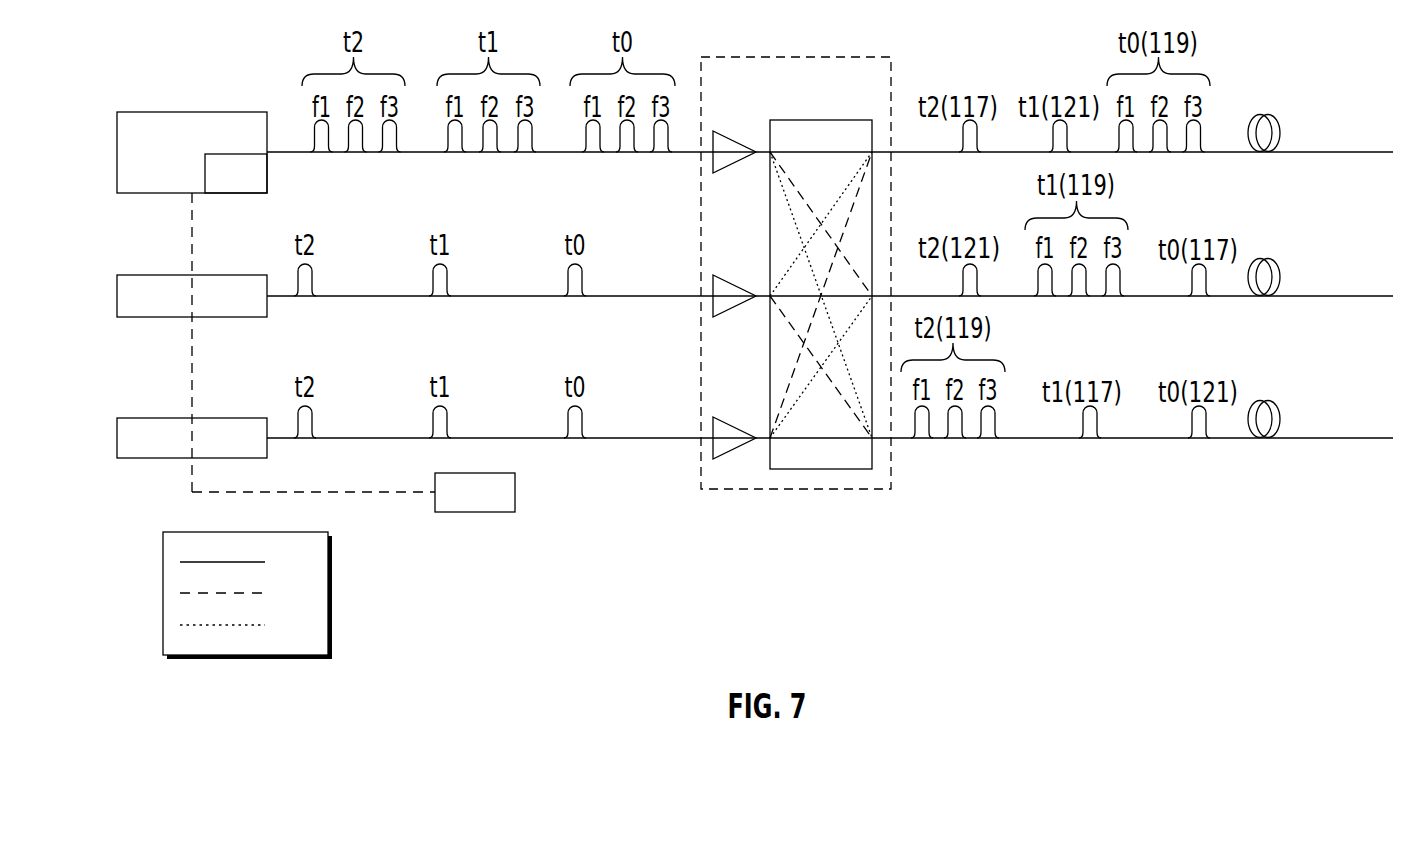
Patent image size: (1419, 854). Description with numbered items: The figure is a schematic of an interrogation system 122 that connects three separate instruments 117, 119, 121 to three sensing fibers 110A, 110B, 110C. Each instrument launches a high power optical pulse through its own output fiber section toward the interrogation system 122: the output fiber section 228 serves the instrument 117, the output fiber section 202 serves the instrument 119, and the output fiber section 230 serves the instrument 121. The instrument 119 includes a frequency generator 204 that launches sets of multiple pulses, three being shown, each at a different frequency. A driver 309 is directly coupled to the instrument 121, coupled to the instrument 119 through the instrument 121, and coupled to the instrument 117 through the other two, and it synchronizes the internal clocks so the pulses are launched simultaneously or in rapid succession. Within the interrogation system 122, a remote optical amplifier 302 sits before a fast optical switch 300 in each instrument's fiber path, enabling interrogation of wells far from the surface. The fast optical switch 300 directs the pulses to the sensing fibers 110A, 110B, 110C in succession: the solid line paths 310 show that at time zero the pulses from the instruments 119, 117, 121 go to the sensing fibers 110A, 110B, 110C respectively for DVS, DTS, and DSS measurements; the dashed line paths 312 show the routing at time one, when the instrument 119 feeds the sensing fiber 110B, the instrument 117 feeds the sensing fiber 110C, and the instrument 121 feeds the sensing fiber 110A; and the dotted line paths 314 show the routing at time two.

The instrument 119 is at (213, 148).
The frequency generator 204 is at (257, 185).
The instrument 117 is at (213, 308).
The instrument 121 is at (213, 452).
The output fiber section 202 is at (282, 154).
The output fiber section 228 is at (282, 298).
The output fiber section 230 is at (282, 440).
The driver 309 is at (455, 503).
The interrogation system 122 is at (882, 57).
The remote optical amplifier 302 is at (724, 131).
The fast optical switch 300 is at (810, 120).
The sensing fiber 110A is at (1335, 152).
The sensing fiber 110B is at (1335, 296).
The sensing fiber 110C is at (1335, 438).
The solid line path 310 is at (310, 567).
The dashed line path 312 is at (310, 597).
The dotted line path 314 is at (310, 626).